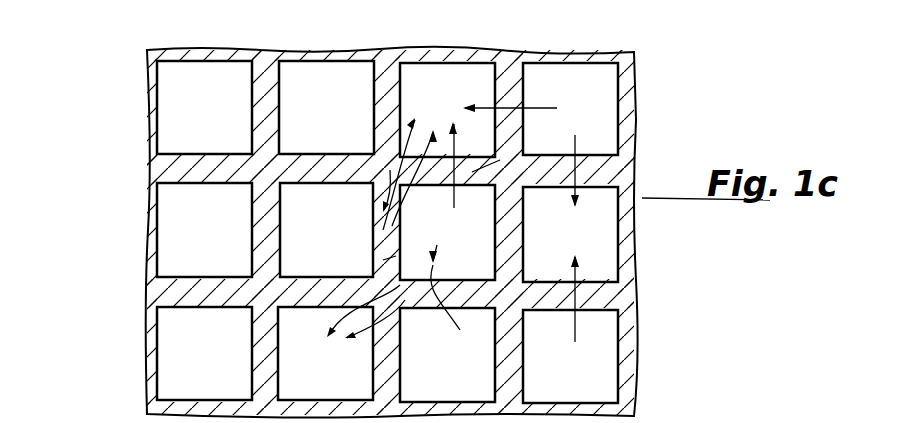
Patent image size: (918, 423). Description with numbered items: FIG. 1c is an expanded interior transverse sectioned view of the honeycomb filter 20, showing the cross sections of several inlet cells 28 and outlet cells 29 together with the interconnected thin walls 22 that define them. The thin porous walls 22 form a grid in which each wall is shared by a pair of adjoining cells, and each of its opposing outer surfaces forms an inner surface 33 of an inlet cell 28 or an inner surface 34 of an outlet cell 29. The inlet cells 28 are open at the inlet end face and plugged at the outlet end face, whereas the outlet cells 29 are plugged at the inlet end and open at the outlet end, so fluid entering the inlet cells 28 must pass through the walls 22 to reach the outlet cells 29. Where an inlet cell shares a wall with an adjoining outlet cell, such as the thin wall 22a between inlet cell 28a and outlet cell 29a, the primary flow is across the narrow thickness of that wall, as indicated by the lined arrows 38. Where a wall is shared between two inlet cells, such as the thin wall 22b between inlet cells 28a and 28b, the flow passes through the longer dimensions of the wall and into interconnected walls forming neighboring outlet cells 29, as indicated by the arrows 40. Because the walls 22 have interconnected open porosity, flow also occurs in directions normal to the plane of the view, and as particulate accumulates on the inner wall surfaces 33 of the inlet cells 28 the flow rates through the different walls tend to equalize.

The filter 20 is at (140, 86).
The thin walls 22 is at (585, 295).
The thin wall shared by adjoining inlet and outlet cells 22a is at (472, 172).
The thin wall between adjoining inlet cells 22b is at (383, 260).
The inlet cells 28 is at (210, 118).
The inlet cell 28a is at (443, 252).
The inlet cell 28b is at (305, 229).
The outlet cells 29 is at (222, 227).
The outlet cell 29a is at (428, 102).
The inner surface of inlet cell 33 is at (160, 100).
The inner surface of outlet cell 34 is at (253, 186).
The lined arrows 38 is at (533, 108).
The arrows 40 is at (392, 193).